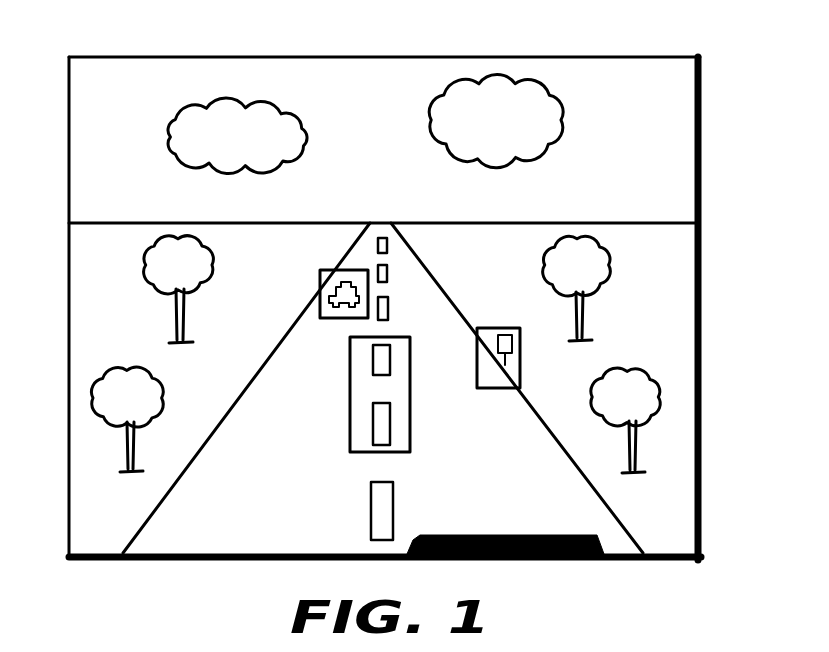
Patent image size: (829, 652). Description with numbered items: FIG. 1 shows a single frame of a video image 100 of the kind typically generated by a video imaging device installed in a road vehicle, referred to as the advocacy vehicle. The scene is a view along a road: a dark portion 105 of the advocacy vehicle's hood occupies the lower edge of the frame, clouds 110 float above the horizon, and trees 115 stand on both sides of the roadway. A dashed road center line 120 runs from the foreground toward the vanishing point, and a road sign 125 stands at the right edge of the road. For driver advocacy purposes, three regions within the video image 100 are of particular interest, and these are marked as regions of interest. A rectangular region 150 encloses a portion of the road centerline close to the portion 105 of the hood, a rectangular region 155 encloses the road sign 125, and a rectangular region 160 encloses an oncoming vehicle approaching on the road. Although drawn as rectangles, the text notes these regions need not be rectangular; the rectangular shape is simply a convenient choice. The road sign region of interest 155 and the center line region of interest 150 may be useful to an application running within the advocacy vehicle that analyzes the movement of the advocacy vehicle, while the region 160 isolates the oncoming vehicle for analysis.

The video image 100 is at (700, 128).
The portion of a hood 105 is at (503, 560).
The clouds 110 is at (514, 87).
The trees 115 is at (128, 448).
The road center line 120 is at (335, 285).
The road sign 125 is at (617, 335).
The rectangular region 150 is at (323, 270).
The rectangular region 155 is at (520, 357).
The rectangular region 160 is at (325, 320).